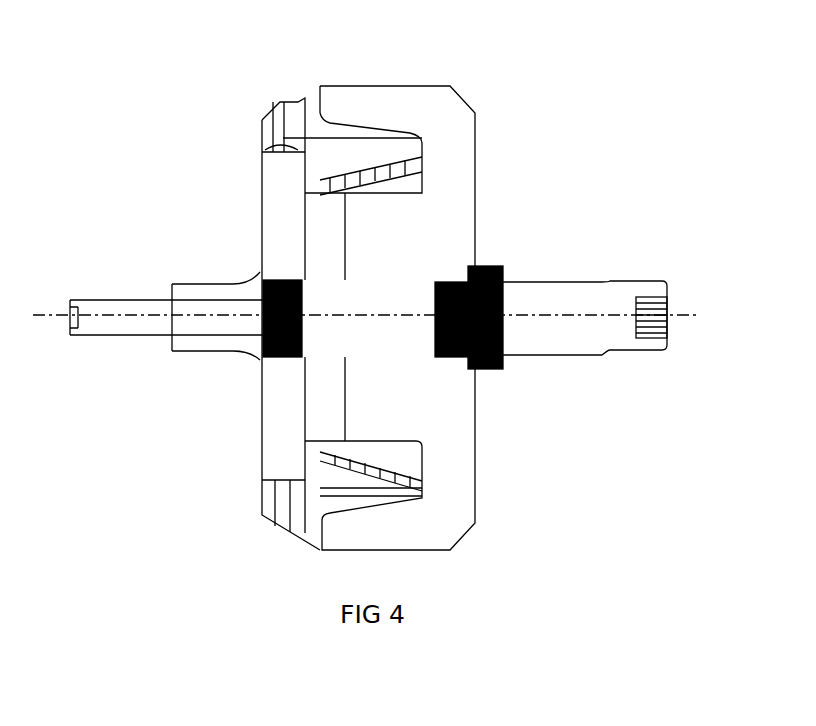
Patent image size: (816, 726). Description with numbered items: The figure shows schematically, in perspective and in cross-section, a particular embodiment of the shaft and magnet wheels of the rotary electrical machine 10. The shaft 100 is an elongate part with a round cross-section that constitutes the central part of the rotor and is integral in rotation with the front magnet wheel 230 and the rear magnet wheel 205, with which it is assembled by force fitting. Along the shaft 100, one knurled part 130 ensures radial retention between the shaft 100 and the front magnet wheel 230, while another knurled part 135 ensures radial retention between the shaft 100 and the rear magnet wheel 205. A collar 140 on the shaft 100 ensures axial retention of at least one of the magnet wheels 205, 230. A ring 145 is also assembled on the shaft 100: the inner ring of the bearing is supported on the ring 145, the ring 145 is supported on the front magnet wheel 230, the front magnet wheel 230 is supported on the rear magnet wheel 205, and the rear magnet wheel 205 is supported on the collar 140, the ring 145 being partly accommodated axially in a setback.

The rotary electrical machine 10 is at (360, 62).
The shaft 100 is at (652, 268).
The knurled part 130 is at (505, 295).
The knurled part 135 is at (260, 357).
The collar 140 is at (250, 282).
The ring 145 is at (485, 370).
The rear magnet wheel 205 is at (278, 445).
The front magnet wheel 230 is at (470, 132).